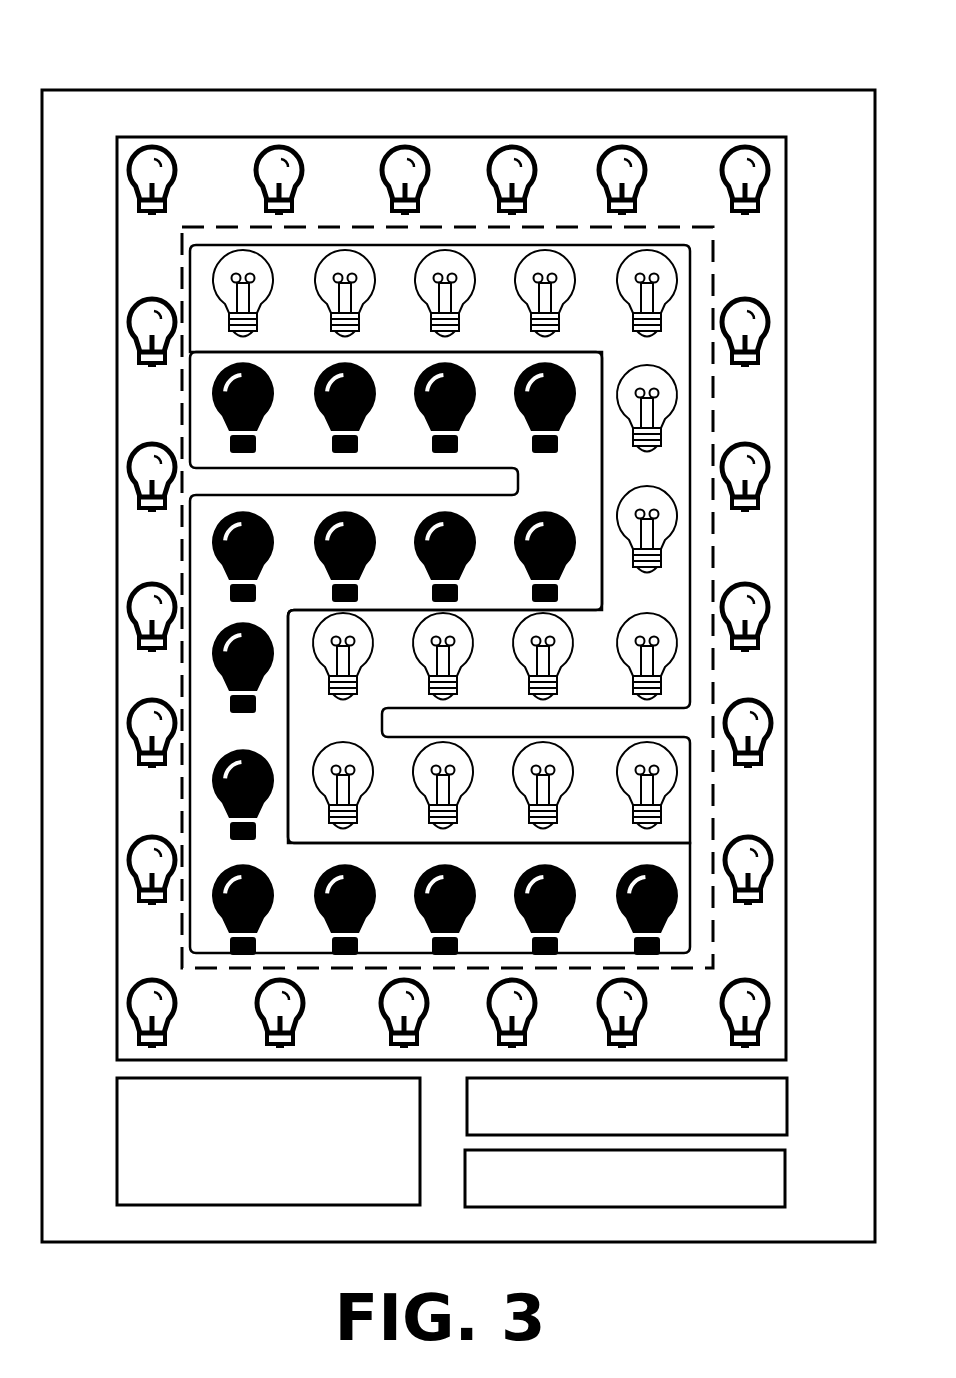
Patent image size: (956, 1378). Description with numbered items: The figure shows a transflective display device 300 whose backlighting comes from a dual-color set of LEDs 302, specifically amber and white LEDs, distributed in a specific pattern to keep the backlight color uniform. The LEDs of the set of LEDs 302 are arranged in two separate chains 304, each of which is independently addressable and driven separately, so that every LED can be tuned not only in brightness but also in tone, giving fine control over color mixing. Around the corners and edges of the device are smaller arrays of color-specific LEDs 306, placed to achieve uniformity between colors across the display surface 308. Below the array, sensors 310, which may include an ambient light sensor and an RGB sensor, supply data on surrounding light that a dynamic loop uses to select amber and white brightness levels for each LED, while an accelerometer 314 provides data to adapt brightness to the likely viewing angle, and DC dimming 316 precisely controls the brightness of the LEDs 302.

The transflective display device 300 is at (793, 84).
The dual-color set of LEDs 302 is at (181, 924).
The chain 304 is at (690, 663).
The color-specific LEDs 306 is at (380, 161).
The display surface 308 is at (641, 134).
The sensors 310 is at (268, 1141).
The accelerometer 314 is at (625, 1178).
The DC dimming 316 is at (627, 1106).